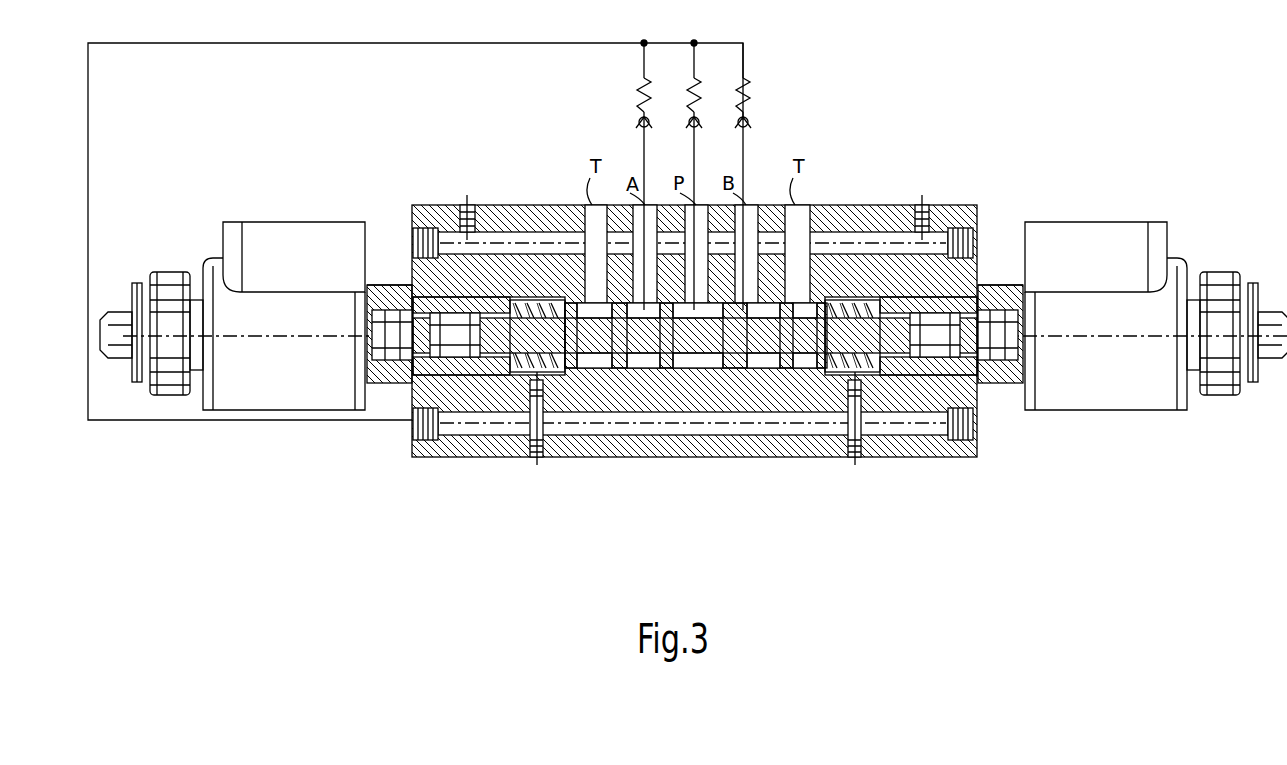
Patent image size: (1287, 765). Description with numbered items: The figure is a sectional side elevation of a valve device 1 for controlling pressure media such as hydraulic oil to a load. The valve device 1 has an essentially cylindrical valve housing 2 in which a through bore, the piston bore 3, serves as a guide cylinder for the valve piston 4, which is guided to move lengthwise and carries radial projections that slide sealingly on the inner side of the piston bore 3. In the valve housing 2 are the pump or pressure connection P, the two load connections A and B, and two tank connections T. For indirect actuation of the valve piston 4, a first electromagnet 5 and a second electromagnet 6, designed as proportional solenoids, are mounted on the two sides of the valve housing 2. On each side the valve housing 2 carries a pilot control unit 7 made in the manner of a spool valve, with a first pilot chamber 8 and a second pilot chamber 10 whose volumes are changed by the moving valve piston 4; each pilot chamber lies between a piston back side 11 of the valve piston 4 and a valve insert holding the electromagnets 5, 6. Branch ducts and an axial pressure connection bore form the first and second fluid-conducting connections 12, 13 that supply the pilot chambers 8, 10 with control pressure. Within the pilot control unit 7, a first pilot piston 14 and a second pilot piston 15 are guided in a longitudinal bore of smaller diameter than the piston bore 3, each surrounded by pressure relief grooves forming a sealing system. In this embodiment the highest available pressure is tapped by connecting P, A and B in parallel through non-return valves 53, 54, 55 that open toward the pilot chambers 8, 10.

The valve device 1 is at (1140, 116).
The valve housing 2 is at (897, 205).
The piston bore 3 is at (692, 302).
The valve piston 4 is at (748, 370).
The first electromagnet 5 is at (302, 222).
The second electromagnet 6 is at (1125, 222).
The pilot control unit 7 is at (391, 236).
The first pilot chamber 8 is at (545, 300).
The second pilot chamber 10 is at (853, 300).
The piston back side 11 is at (890, 392).
The first fluid-conducting connection 12 is at (528, 470).
The second fluid-conducting connection 13 is at (851, 470).
The first pilot piston 14 is at (400, 385).
The second pilot piston 15 is at (1018, 385).
The non-return valve 53 is at (640, 118).
The non-return valve 54 is at (688, 118).
The non-return valve 55 is at (736, 118).